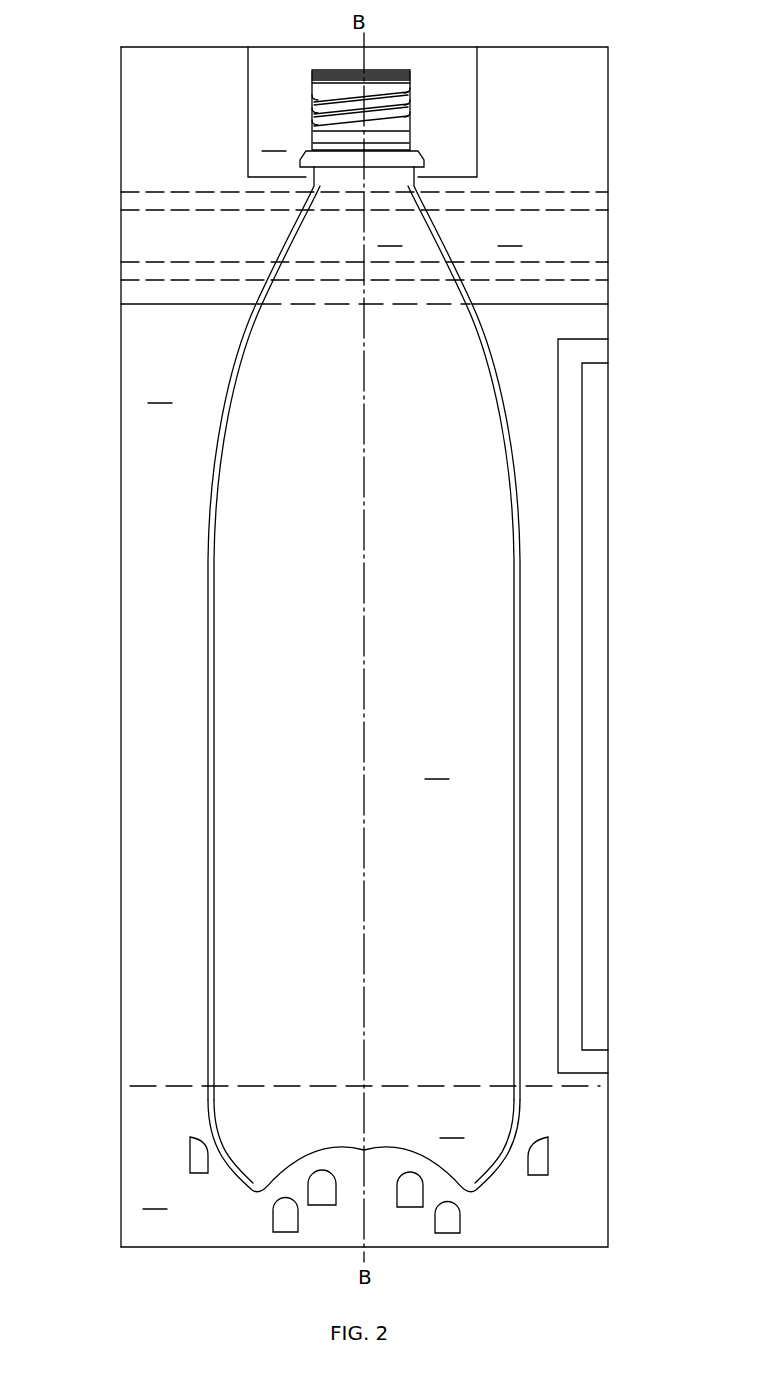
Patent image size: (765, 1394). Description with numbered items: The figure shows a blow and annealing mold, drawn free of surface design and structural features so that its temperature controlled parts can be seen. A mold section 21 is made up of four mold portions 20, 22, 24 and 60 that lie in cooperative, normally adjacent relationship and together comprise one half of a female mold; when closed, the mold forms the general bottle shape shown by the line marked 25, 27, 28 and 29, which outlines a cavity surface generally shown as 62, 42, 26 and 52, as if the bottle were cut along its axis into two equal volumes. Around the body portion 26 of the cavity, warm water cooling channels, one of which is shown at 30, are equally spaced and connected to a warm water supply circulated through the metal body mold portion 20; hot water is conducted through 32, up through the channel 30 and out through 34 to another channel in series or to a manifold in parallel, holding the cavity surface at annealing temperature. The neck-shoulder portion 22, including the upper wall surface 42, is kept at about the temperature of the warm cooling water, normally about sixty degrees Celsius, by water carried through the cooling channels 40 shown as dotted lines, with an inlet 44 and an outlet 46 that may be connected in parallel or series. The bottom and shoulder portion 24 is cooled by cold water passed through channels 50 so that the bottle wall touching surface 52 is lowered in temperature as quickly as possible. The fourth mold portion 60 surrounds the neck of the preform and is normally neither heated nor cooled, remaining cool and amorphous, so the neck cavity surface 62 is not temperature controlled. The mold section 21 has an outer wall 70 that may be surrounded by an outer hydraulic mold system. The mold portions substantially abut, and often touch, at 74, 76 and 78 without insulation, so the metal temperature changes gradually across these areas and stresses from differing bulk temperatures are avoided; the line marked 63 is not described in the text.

The mold portion 20 is at (160, 392).
The mold section 21 is at (121, 588).
The neck-shoulder portion 22 is at (510, 235).
The bottom and shoulder portion 24 is at (155, 1198).
The cavity outline line 25 is at (410, 115).
The body portion of the cavity 26 is at (464, 633).
The cavity outline line 27 is at (275, 241).
The cavity outline line 28 is at (208, 747).
The cavity outline line 29 is at (210, 1130).
The warm water cooling channel 30 is at (575, 833).
The hot water inlet passage 32 is at (608, 1076).
The hot water outlet passage 34 is at (608, 352).
The cooling channels 40 is at (126, 188).
The upper wall surface 42 is at (390, 235).
The inlet 44 is at (608, 198).
The outlet 46 is at (121, 199).
The cold water channels 50 is at (287, 1218).
The cavity surface 52 is at (452, 1127).
The fourth mold portion 60 is at (274, 140).
The cavity surface 62 is at (411, 134).
The thread 63 is at (314, 120).
The outer wall 70 is at (121, 1007).
The abutment area 74 is at (248, 113).
The abutment area 76 is at (163, 304).
The abutment area 78 is at (309, 1088).